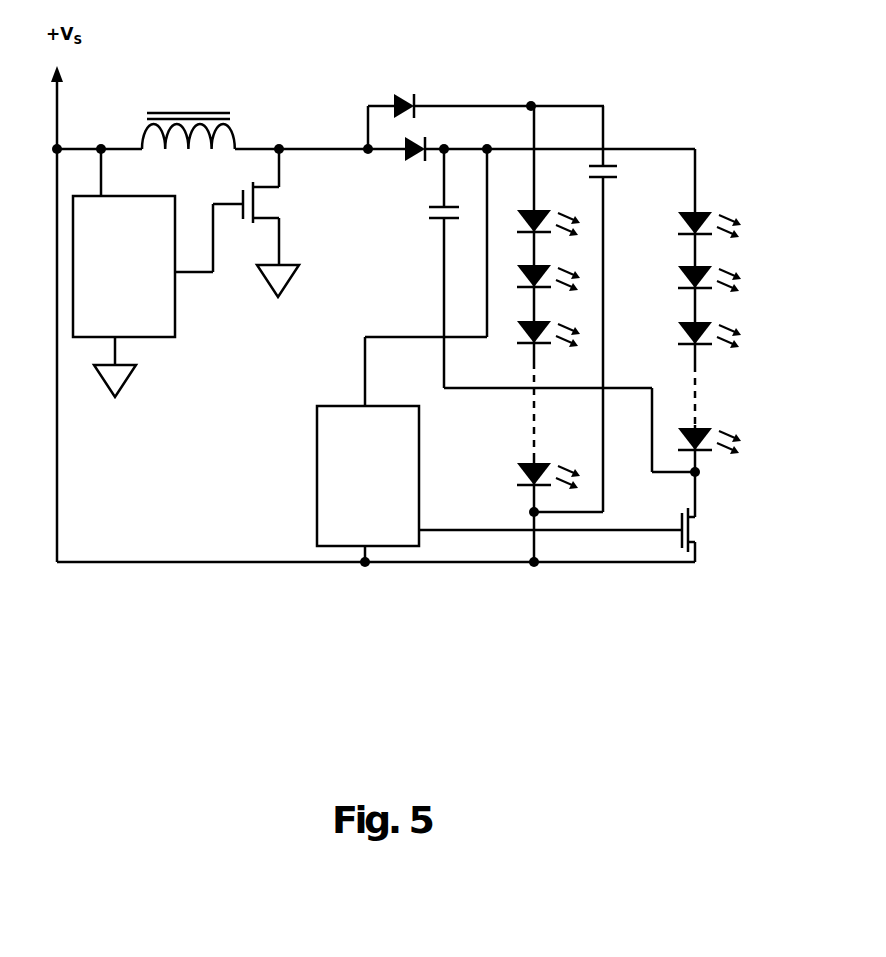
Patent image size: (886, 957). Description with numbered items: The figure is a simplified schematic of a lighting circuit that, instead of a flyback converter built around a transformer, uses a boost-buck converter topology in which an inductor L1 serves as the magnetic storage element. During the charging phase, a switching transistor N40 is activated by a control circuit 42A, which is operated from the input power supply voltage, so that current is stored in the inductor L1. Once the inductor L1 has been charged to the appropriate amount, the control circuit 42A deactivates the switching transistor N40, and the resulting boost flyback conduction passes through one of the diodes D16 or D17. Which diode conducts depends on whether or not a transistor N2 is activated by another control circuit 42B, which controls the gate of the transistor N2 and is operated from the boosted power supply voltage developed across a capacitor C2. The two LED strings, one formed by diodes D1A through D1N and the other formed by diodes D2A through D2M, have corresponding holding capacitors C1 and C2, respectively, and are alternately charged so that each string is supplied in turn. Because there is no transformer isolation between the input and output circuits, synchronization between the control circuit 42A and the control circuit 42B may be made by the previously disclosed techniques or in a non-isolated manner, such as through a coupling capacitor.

The inductor L1 is at (188, 110).
The control circuit 42A is at (158, 273).
The switching transistor N40 is at (286, 223).
The diode D16 is at (486, 108).
The diode D17 is at (442, 141).
The holding capacitor C2 is at (545, 310).
The holding capacitor C1 is at (592, 309).
The control circuit 42B is at (499, 355).
The diode D1A is at (550, 234).
The diode D1N is at (549, 462).
The diode D2A is at (688, 257).
The diode D2M is at (694, 418).
The transistor N2 is at (707, 517).